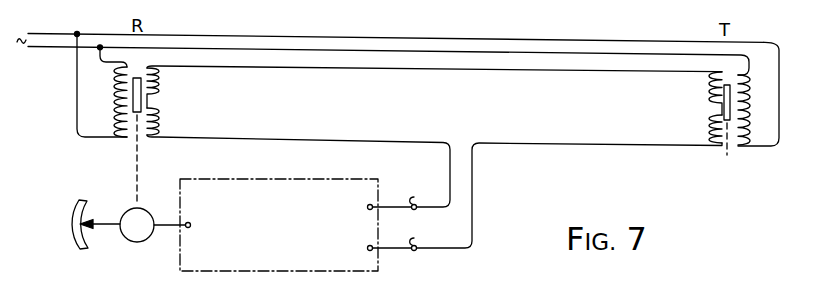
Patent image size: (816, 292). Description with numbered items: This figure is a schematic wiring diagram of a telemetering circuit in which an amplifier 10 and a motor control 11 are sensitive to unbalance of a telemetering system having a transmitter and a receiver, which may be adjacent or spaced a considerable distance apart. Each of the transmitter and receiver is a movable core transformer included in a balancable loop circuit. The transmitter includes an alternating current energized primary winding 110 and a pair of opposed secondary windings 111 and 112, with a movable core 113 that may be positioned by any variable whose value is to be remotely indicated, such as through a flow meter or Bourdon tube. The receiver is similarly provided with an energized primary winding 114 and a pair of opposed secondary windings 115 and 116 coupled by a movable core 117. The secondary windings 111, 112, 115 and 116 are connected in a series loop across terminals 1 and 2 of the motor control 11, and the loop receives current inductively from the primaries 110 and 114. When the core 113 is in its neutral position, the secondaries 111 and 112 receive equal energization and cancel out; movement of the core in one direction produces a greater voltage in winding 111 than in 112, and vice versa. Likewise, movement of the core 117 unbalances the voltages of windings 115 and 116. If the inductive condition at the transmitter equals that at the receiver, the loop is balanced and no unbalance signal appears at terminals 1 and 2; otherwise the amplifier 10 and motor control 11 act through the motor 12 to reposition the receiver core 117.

The terminal 1 is at (417, 198).
The terminal 2 is at (418, 241).
The amplifier 10 is at (337, 218).
The motor control 11 is at (358, 251).
The motor 12 is at (130, 241).
The primary winding 110 is at (750, 128).
The secondary winding 111 is at (708, 78).
The secondary winding 112 is at (708, 115).
The movable core 113 is at (728, 84).
The primary winding 114 is at (113, 101).
The secondary winding 115 is at (163, 73).
The secondary winding 116 is at (158, 109).
The movable core 117 is at (137, 77).